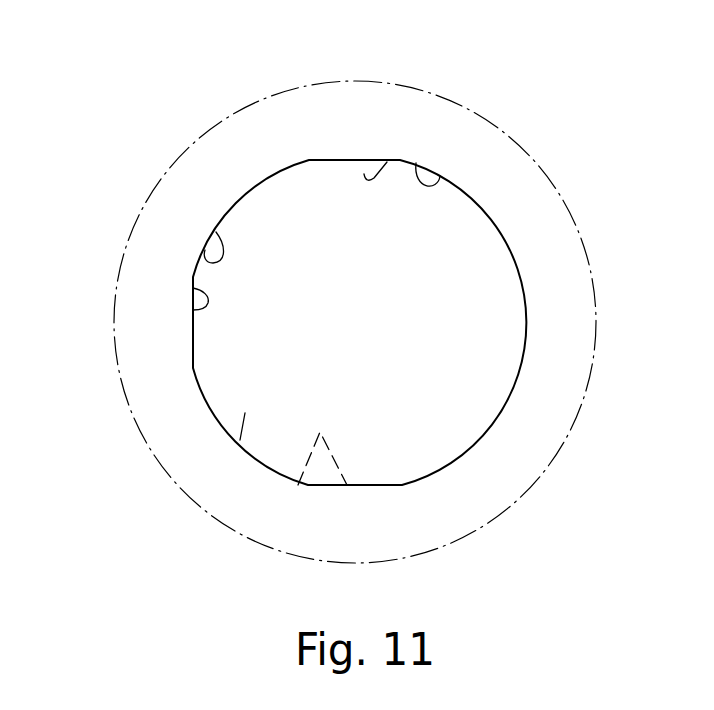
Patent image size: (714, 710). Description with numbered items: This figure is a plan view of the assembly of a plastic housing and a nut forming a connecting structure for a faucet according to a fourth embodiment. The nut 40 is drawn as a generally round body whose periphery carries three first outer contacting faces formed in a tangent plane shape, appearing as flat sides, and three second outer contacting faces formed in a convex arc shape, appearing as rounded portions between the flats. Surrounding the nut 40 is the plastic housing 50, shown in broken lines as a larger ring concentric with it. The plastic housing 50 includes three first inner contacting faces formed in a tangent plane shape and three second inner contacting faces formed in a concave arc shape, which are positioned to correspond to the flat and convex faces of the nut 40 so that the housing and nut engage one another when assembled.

The nut 40 is at (496, 227).
The plastic housing 50 is at (498, 123).